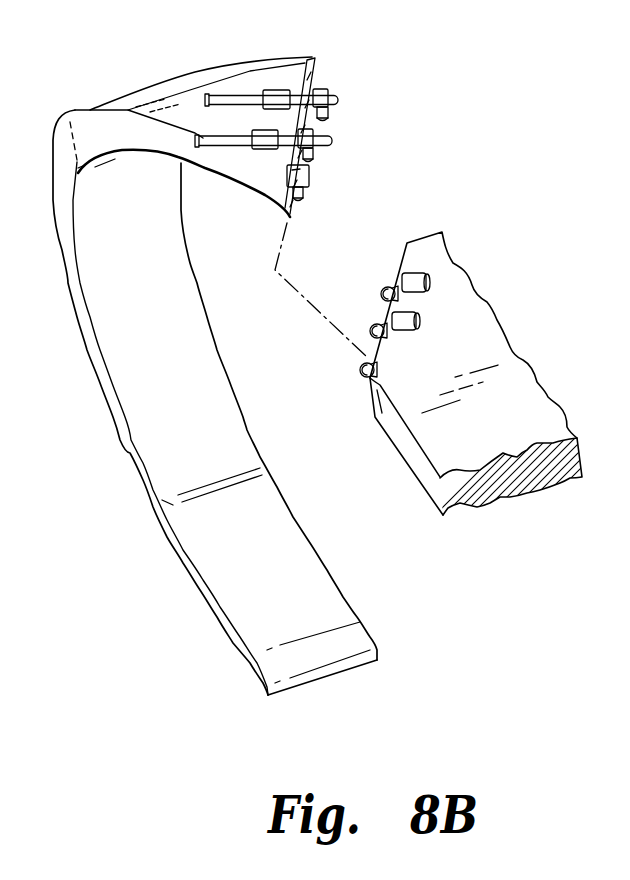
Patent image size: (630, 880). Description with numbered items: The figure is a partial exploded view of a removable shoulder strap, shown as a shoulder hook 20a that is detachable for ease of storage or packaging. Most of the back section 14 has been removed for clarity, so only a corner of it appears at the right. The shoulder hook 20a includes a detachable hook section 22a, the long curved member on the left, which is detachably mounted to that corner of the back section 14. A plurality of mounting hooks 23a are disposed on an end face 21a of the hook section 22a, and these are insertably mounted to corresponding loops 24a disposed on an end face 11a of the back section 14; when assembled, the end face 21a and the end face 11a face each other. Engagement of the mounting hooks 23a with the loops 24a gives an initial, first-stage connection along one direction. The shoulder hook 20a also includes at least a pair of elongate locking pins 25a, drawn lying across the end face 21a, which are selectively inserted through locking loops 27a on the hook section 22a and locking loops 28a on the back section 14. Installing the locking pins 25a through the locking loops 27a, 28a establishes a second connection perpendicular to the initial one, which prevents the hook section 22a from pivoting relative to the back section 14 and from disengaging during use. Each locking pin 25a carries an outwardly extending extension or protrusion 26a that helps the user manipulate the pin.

The shoulder hook 20a is at (478, 116).
The detachable hook section 22a is at (78, 130).
The end face 21a is at (320, 84).
The elongate locking pin 25a is at (256, 92).
The extension or protrusion 26a is at (202, 130).
The locking loop 27a is at (272, 90).
The mounting hook 23a is at (312, 170).
The end face 11a is at (402, 253).
The back section 14 is at (528, 397).
The loop 24a is at (371, 328).
The locking loop 28a is at (410, 312).